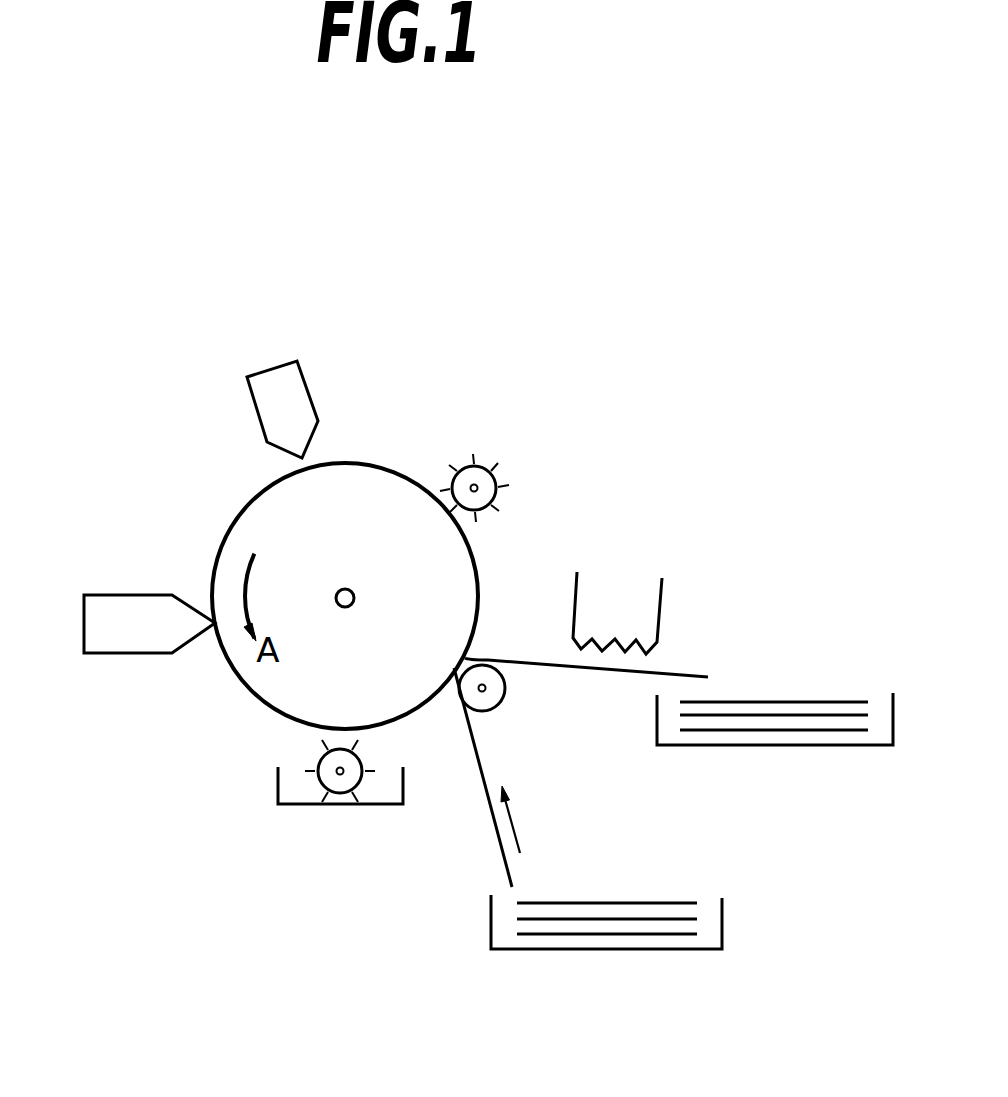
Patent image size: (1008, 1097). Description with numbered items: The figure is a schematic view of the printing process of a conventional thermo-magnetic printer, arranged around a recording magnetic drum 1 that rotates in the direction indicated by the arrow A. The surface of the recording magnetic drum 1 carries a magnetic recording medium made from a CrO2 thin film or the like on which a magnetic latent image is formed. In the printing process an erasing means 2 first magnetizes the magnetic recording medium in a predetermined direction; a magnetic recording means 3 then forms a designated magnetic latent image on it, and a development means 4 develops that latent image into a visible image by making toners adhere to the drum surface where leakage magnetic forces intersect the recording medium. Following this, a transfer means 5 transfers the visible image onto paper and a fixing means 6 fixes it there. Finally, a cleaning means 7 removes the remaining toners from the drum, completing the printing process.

The recording magnetic drum 1 is at (363, 486).
The erasing means 2 is at (261, 398).
The magnetic recording means 3 is at (91, 613).
The development means 4 is at (292, 784).
The transfer means 5 is at (495, 702).
The fixing means 6 is at (642, 609).
The cleaning means 7 is at (481, 464).